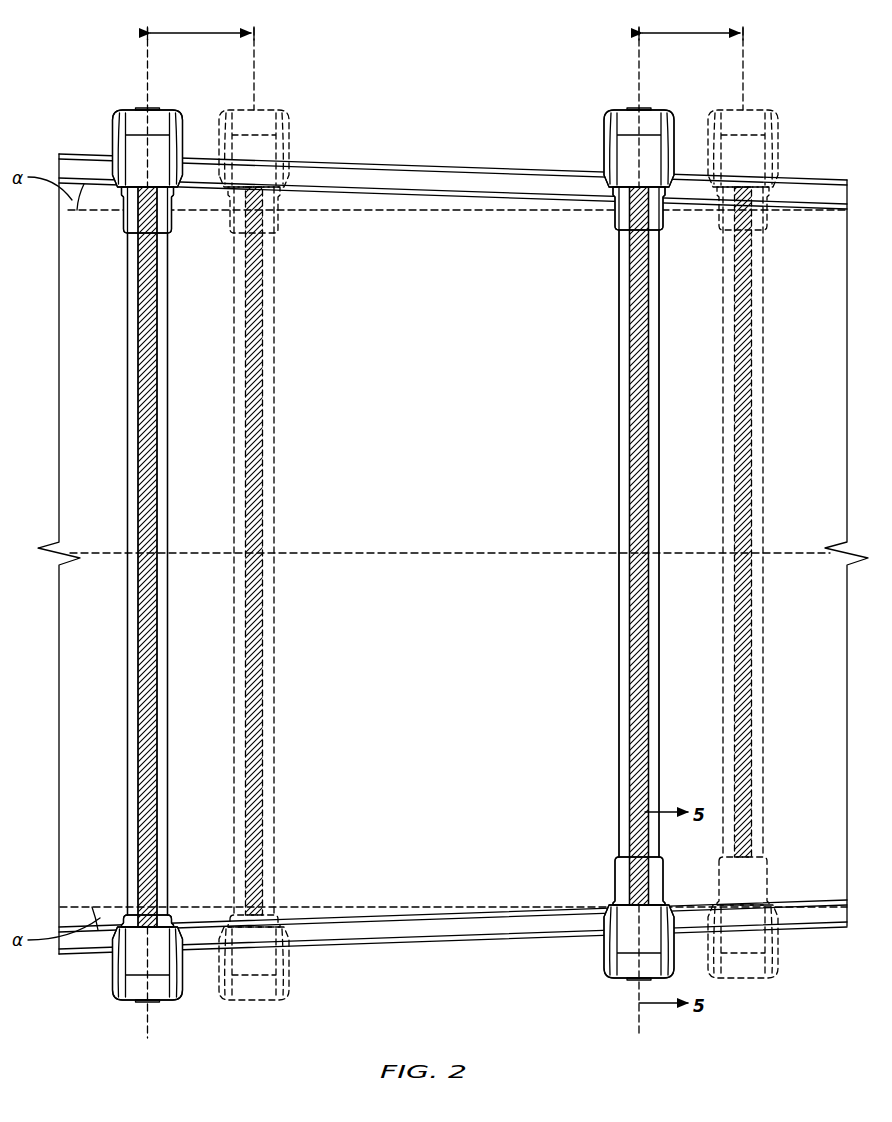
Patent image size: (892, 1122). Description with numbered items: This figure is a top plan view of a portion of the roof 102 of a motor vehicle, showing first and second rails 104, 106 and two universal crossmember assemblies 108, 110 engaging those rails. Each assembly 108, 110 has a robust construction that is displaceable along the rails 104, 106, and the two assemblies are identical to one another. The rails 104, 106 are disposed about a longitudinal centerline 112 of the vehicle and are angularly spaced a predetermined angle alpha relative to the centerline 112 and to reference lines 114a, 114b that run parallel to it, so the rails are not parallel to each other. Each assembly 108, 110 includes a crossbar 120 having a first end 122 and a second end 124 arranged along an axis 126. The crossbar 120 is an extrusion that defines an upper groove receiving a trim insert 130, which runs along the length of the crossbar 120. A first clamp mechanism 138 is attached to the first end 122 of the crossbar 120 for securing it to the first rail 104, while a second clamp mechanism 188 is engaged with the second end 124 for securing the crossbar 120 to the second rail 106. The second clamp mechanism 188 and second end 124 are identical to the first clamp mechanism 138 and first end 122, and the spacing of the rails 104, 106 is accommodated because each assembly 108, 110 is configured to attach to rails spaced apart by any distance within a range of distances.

The roof 102 is at (449, 518).
The first rail 104 is at (463, 944).
The second rail 106 is at (462, 166).
The universal crossmember assembly 108 is at (603, 115).
The universal crossmember assembly 110 is at (106, 118).
The longitudinal centerline 112 is at (105, 553).
The reference line 114a is at (80, 905).
The reference line 114b is at (88, 215).
The crossbar 120 is at (127, 372).
The first end 122 is at (127, 830).
The second end 124 is at (123, 212).
The axis 126 is at (144, 95).
The trim insert 130 is at (140, 722).
The first clamp mechanism 138 is at (133, 1002).
The second clamp mechanism 188 is at (165, 110).